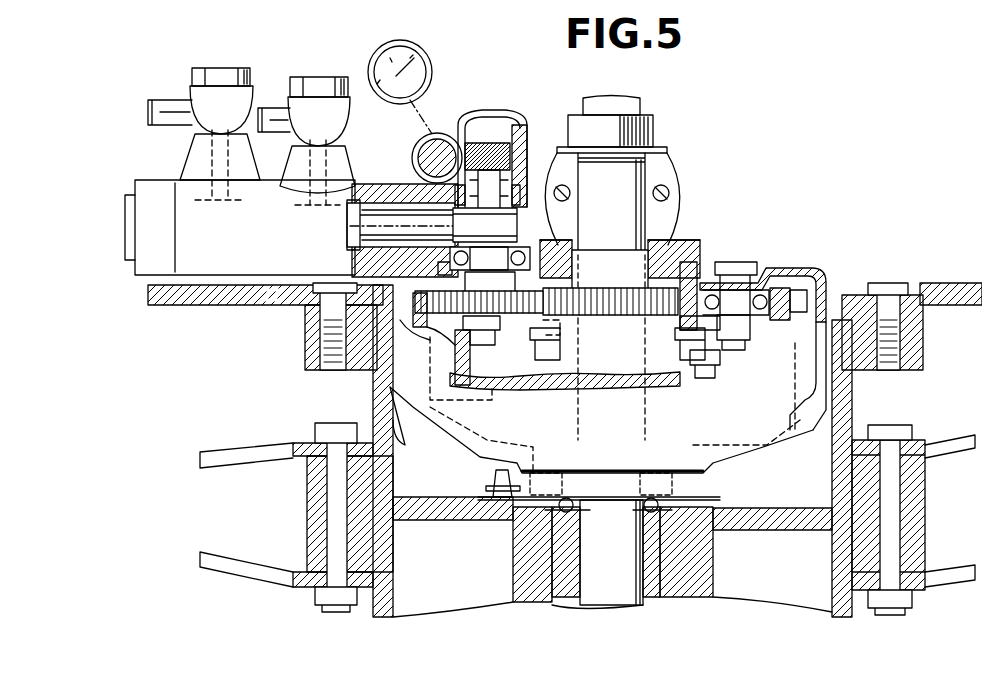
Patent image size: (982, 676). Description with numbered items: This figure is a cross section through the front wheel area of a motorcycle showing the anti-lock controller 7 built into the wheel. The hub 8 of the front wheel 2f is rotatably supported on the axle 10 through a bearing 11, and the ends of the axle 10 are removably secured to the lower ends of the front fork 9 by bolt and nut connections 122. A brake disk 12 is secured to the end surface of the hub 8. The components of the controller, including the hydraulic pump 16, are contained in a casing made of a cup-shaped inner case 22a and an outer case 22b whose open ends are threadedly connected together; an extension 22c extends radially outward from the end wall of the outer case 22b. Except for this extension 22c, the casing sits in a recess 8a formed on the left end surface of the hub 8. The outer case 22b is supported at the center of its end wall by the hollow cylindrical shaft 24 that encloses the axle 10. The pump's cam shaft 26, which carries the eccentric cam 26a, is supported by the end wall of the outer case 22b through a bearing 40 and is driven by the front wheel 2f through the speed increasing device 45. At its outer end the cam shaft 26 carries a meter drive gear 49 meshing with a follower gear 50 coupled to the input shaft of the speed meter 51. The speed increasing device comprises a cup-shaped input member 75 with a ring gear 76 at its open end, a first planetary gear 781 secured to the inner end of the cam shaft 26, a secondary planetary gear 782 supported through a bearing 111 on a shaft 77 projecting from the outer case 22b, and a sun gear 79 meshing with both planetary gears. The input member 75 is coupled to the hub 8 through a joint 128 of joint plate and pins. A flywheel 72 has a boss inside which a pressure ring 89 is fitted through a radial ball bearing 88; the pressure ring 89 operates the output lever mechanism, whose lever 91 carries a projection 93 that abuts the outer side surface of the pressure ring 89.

The front wheel 2f is at (222, 440).
The anti-lock controller 7 is at (778, 270).
The hub 8 is at (308, 508).
The recess 8a is at (425, 473).
The front fork 9 is at (667, 172).
The axle 10 is at (620, 558).
The bearing 11 is at (578, 519).
The brake disk 12 is at (215, 303).
The hydraulic pump 16 is at (346, 233).
The inner case 22a is at (800, 444).
The outer case 22b is at (821, 342).
The extension 22c is at (272, 244).
The hollow cylindrical shaft 24 is at (606, 255).
The cam shaft 26 is at (500, 271).
The eccentric cam 26a is at (500, 236).
The bearing 40 is at (466, 198).
The speed increasing device 45 is at (798, 289).
The meter drive gear 49 is at (512, 152).
The follower gear 50 is at (414, 158).
The speed meter 51 is at (431, 57).
The flywheel 72 is at (505, 392).
The input member 75 is at (430, 341).
The ring gear 76 is at (426, 318).
The shaft 77 is at (735, 270).
The sun gear 79 is at (610, 270).
The radial ball bearing 88 is at (691, 380).
The pressure ring 89 is at (611, 350).
The lever 91 is at (698, 345).
The projection 93 is at (692, 352).
The bearing 111 is at (765, 320).
The bolt and nut connection 122 is at (657, 212).
The joint 128 is at (490, 485).
The first planetary gear 781 is at (490, 283).
The secondary planetary gear 782 is at (694, 289).